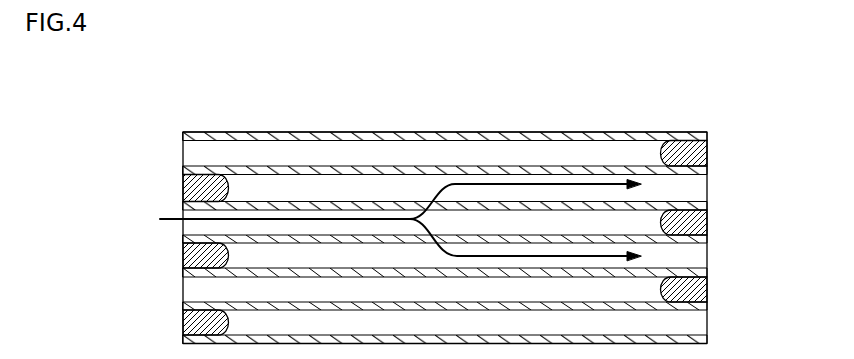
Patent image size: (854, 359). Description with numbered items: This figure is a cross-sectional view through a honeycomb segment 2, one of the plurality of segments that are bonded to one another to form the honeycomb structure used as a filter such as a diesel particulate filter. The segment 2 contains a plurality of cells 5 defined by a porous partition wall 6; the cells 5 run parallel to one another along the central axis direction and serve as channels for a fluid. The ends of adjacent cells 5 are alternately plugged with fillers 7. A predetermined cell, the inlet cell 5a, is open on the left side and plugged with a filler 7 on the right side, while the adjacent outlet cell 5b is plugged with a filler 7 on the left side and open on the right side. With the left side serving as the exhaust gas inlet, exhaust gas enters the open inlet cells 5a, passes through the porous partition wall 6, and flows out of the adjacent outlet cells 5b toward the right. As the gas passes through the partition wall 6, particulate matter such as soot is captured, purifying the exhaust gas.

The honeycomb segment 2 is at (422, 197).
The cell 5 is at (384, 135).
The inlet cell 5a is at (207, 154).
The outlet cell 5b is at (200, 181).
The partition wall 6 is at (327, 207).
The filler 7 is at (237, 190).